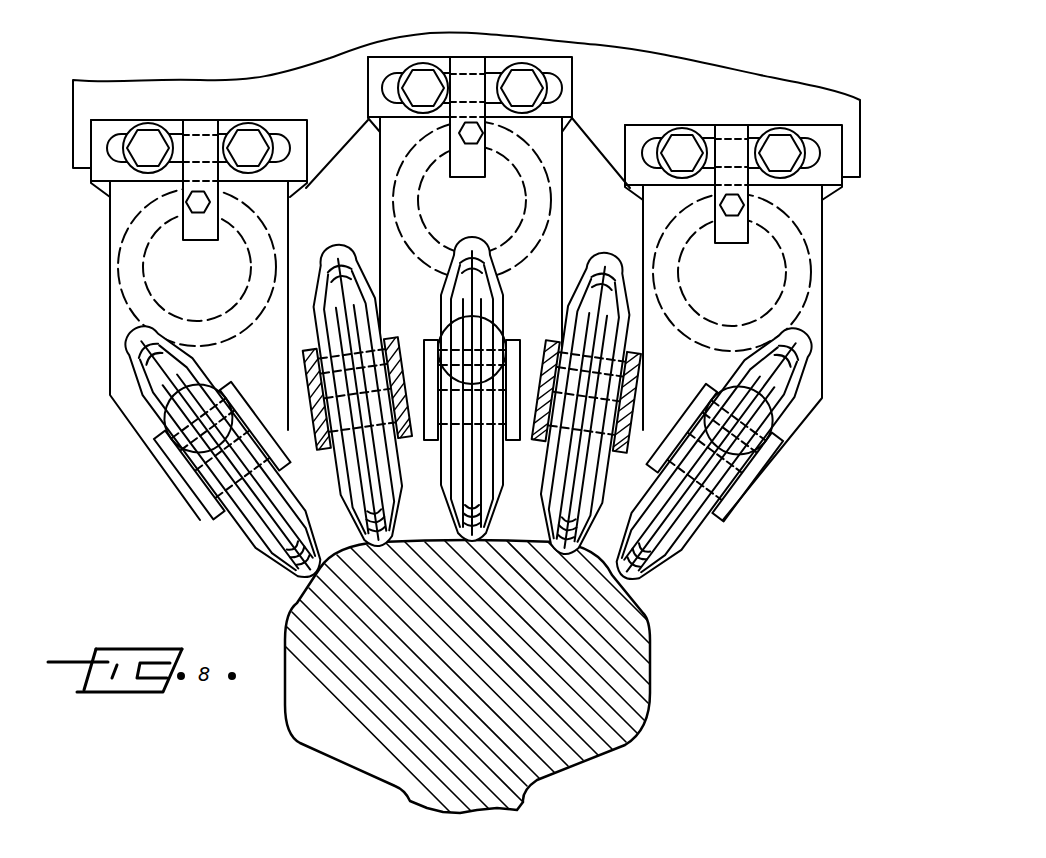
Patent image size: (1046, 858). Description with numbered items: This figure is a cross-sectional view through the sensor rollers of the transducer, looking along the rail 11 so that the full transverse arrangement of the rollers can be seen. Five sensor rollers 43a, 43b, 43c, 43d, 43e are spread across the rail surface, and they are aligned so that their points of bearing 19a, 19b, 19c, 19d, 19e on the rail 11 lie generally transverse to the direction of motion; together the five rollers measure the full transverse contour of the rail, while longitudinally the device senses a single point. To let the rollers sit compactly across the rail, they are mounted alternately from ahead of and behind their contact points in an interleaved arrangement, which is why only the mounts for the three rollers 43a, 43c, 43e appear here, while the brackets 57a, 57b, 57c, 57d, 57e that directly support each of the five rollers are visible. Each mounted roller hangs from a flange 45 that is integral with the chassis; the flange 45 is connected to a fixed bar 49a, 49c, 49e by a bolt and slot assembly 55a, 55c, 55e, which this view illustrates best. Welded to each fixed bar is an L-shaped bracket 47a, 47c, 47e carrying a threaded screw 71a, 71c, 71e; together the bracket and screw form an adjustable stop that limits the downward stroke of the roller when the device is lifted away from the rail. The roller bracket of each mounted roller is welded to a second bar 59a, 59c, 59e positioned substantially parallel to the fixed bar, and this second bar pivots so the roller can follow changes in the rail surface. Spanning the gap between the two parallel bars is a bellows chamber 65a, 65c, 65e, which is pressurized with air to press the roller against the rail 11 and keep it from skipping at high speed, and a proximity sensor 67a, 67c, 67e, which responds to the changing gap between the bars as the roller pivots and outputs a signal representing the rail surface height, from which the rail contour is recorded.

The rail 11 is at (484, 674).
The point of bearing 19a is at (316, 575).
The point of bearing 19b is at (380, 548).
The point of bearing 19c is at (470, 547).
The point of bearing 19d is at (562, 548).
The point of bearing 19e is at (618, 578).
The sensor roller 43a is at (270, 532).
The sensor roller 43b is at (362, 495).
The sensor roller 43c is at (457, 493).
The sensor roller 43d is at (557, 497).
The sensor roller 43e is at (668, 518).
The flange 45 is at (692, 51).
The L-shaped bracket 47a is at (212, 128).
The L-shaped bracket 47c is at (475, 62).
The L-shaped bracket 47e is at (745, 126).
The bar 49a is at (308, 188).
The bar 49c is at (573, 103).
The bar 49e is at (830, 198).
The bolt and slot assembly 55a is at (150, 137).
The bolt and slot assembly 55c is at (426, 72).
The bolt and slot assembly 55e is at (680, 137).
The bracket 57a is at (222, 520).
The bracket 57b is at (320, 445).
The bracket 57c is at (503, 440).
The bracket 57d is at (615, 445).
The bracket 57e is at (702, 520).
The bar 59a is at (110, 288).
The bar 59c is at (563, 205).
The bar 59e is at (823, 300).
The bellows chamber 65a is at (130, 313).
The bellows chamber 65c is at (543, 233).
The bellows chamber 65e is at (800, 315).
The proximity sensor 67a is at (160, 432).
The proximity sensor 67c is at (503, 325).
The proximity sensor 67e is at (718, 385).
The threaded screw 71a is at (205, 203).
The threaded screw 71c is at (481, 138).
The threaded screw 71e is at (742, 207).